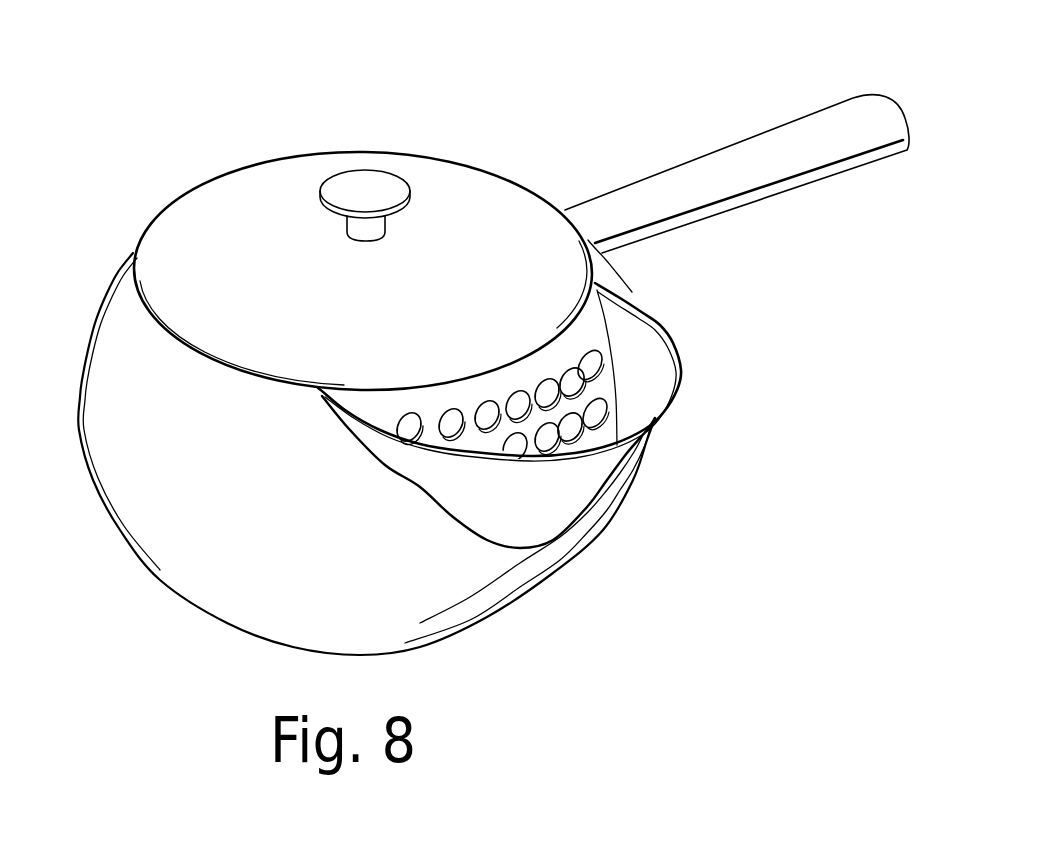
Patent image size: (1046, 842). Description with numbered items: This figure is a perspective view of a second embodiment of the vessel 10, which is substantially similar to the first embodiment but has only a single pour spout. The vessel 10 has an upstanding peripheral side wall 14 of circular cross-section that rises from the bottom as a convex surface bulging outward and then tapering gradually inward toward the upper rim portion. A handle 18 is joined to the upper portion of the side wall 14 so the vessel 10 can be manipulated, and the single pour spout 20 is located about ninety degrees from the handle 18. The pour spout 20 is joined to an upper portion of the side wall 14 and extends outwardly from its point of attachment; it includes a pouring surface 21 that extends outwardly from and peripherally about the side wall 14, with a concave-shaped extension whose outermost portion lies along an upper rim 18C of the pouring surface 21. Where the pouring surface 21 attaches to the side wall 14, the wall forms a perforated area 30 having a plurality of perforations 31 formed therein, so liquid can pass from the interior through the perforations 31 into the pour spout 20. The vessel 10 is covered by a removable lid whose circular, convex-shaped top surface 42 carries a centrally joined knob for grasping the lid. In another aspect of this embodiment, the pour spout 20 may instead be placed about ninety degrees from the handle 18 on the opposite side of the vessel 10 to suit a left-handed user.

The vessel 10 is at (235, 78).
The side wall 14 is at (140, 507).
The handle 18 is at (752, 152).
The upper rim 18C is at (683, 390).
The first pour spout 20 is at (595, 470).
The pouring surface 21 is at (660, 373).
The perforated area 30 is at (496, 374).
The perforations 31 is at (445, 410).
The top surface 42 is at (433, 173).